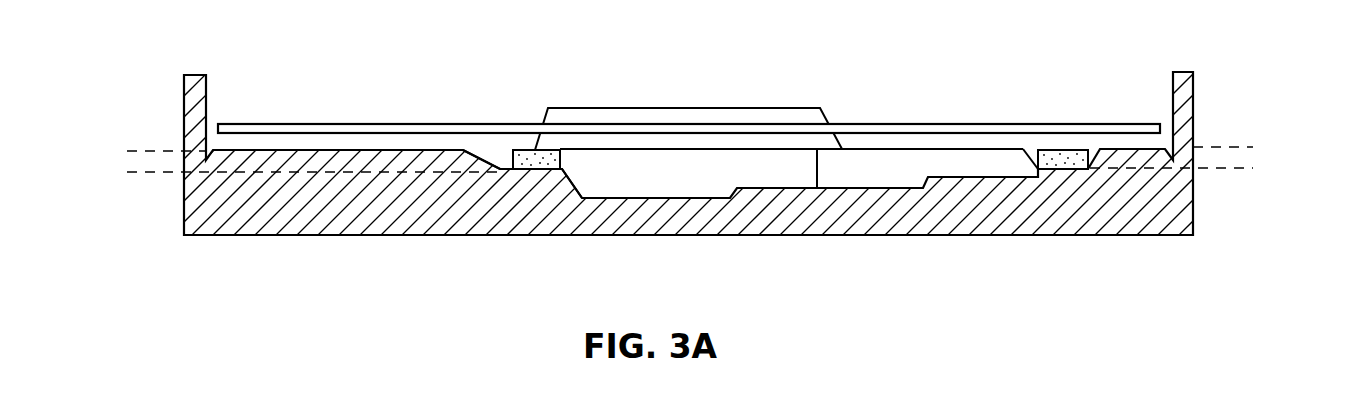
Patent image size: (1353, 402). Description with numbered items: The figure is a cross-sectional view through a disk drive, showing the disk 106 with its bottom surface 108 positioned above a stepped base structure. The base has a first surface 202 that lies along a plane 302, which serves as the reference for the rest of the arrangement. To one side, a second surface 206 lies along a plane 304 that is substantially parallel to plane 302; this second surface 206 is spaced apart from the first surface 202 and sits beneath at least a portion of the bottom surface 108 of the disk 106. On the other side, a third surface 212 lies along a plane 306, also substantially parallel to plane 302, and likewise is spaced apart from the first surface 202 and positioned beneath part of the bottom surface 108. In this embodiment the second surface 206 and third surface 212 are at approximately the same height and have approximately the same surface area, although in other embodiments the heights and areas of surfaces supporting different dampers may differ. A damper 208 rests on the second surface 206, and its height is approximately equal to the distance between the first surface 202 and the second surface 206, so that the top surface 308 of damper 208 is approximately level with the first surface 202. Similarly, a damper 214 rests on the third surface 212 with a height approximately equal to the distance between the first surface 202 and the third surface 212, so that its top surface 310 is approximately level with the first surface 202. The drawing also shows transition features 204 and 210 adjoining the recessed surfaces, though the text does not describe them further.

The disk 106 is at (886, 123).
The bottom surface 108 is at (320, 137).
The first surface 202 is at (407, 150).
The recess sidewall 204 is at (1033, 150).
The second surface 206 is at (1040, 172).
The damper 208 is at (1072, 163).
The recess step 210 is at (500, 164).
The third surface 212 is at (497, 170).
The damper 214 is at (537, 170).
The plane 302 is at (686, 147).
The plane 304 is at (1196, 169).
The plane 306 is at (284, 176).
The top surface 308 is at (1067, 149).
The top surface 310 is at (527, 150).